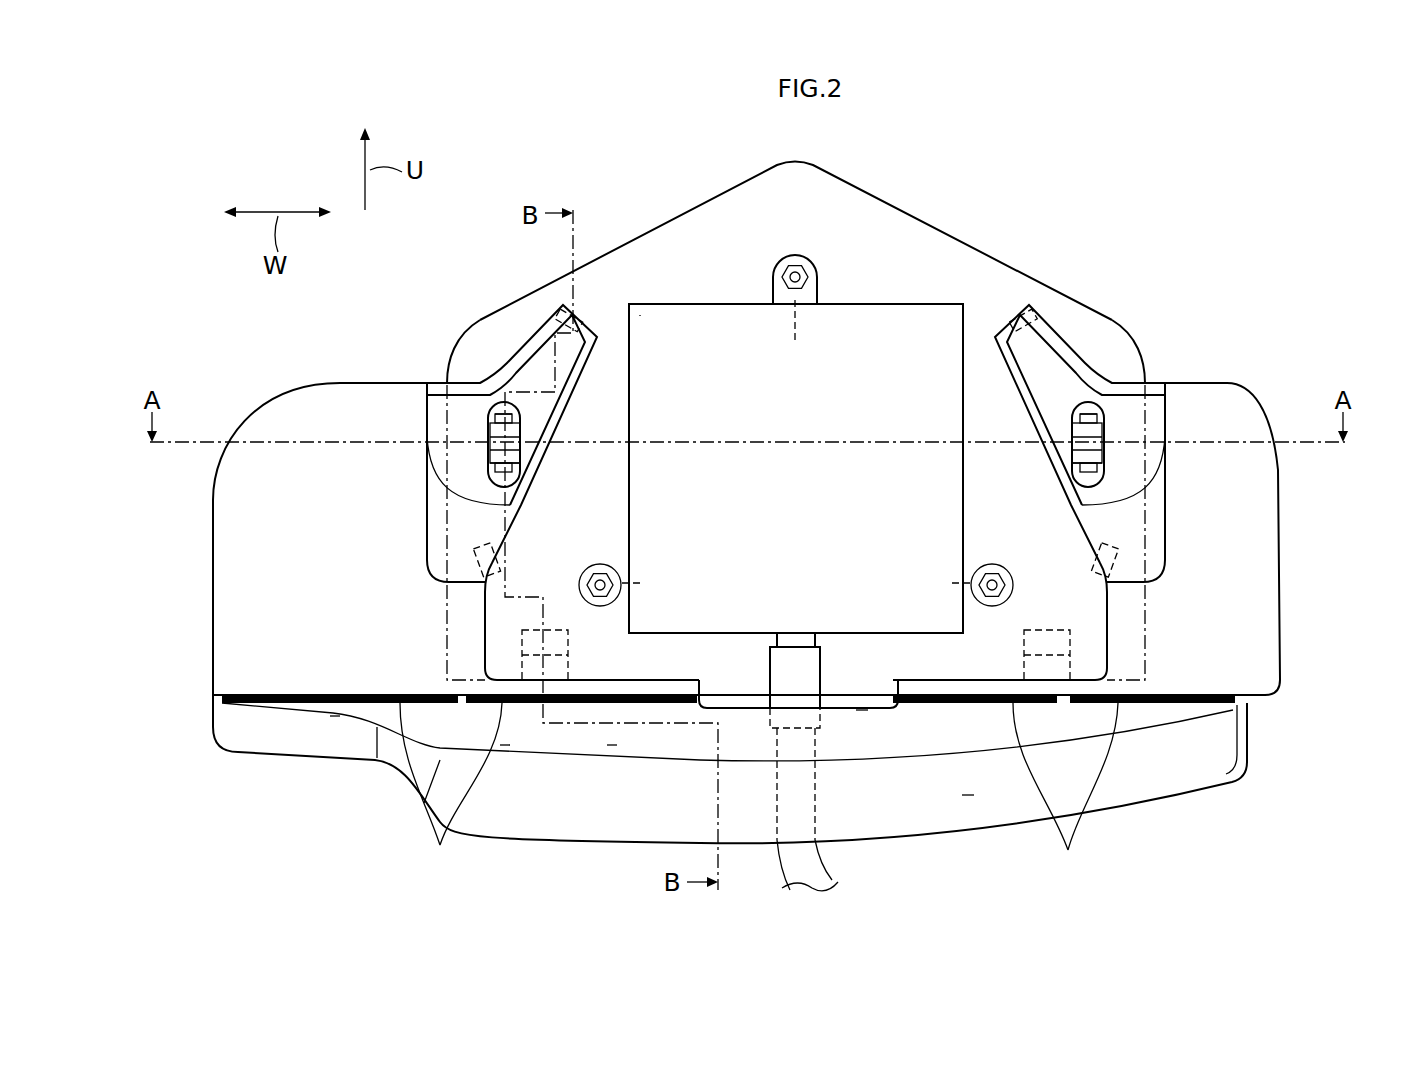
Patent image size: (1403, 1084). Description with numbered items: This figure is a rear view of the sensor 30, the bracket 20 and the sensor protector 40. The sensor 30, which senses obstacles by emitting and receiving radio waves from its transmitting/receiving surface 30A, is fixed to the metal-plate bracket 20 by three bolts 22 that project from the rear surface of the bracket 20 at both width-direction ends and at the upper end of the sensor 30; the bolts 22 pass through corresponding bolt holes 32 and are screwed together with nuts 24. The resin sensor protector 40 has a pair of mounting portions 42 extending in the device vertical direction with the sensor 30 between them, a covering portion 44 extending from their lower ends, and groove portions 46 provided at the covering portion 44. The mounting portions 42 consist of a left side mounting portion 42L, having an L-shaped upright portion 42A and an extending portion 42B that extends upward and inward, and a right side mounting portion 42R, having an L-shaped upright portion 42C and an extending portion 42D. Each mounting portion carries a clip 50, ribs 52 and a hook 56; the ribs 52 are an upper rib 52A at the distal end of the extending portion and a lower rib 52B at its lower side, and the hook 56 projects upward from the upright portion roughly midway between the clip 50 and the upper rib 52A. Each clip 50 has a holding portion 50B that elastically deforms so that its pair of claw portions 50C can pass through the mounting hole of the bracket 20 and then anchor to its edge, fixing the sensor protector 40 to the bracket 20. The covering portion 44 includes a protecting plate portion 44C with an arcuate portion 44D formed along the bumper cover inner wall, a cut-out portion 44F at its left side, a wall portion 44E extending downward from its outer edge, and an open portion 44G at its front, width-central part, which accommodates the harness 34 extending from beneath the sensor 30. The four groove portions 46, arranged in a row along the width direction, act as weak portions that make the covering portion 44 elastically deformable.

The bracket 20 is at (682, 206).
The bolts 22 is at (797, 265).
The nuts 24 is at (812, 280).
The sensor 30 is at (796, 379).
The transmitting/receiving surface 30A is at (735, 328).
The bolt holes 32 is at (952, 583).
The harness 34 is at (792, 858).
The sensor protector 40 is at (1214, 335).
The mounting portions 42 is at (750, 485).
The upright portion 42A is at (246, 556).
The extending portion 42B is at (484, 400).
The upright portion 42C is at (1262, 618).
The extending portion 42D is at (1108, 400).
The left side mounting portion 42L is at (253, 400).
The right side mounting portion 42R is at (1247, 380).
The covering portion 44 is at (730, 804).
The protecting plate portion 44C is at (612, 745).
The arcuate portion 44D is at (505, 745).
The wall portion 44E is at (968, 795).
The cut-out portion 44F is at (335, 718).
The open portion 44G is at (862, 710).
The groove portions 46 is at (440, 847).
The clip 50 is at (793, 463).
The holding portion 50B is at (489, 465).
The claw portions 50C is at (493, 410).
The ribs 52 is at (794, 418).
The upper rib 52A is at (598, 325).
The lower rib 52B is at (480, 558).
The hook 56 is at (565, 650).